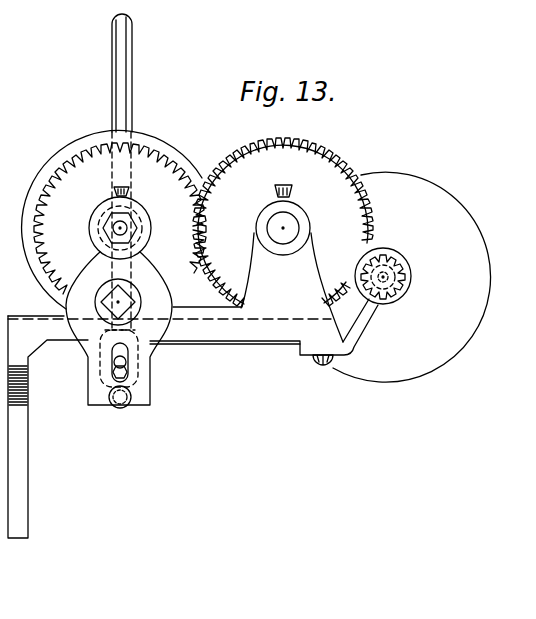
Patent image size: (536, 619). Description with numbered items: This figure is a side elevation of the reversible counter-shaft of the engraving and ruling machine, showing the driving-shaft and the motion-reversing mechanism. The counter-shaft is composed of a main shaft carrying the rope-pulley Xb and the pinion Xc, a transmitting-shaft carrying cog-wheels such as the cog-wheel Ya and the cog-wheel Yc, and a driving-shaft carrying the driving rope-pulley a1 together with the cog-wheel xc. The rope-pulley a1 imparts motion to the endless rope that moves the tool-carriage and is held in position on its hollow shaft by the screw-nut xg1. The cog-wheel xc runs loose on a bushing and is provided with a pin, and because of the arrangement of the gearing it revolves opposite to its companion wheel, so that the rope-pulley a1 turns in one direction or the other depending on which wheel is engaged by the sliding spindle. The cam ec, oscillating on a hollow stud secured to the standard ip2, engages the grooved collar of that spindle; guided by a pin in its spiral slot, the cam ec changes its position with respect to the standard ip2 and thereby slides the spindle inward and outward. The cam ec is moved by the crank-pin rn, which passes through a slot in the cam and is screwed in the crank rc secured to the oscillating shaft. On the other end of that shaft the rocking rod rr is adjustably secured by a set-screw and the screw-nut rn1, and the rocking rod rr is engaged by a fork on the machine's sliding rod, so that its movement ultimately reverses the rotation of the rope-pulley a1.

The rocking rod rr is at (113, 91).
The grooved pulley a1 is at (81, 143).
The cog-wheel xc is at (157, 152).
The cog-wheel Yc is at (236, 158).
The cog-wheel Ya is at (340, 158).
The rope-pulley Xb is at (450, 197).
The pinion Xc is at (401, 270).
The screw-nut xg1 is at (107, 222).
The cam ec is at (163, 368).
The standard ip2 is at (258, 263).
The screw-nut rn1 is at (110, 362).
The crank rc is at (107, 383).
The crank-pin rn is at (120, 398).